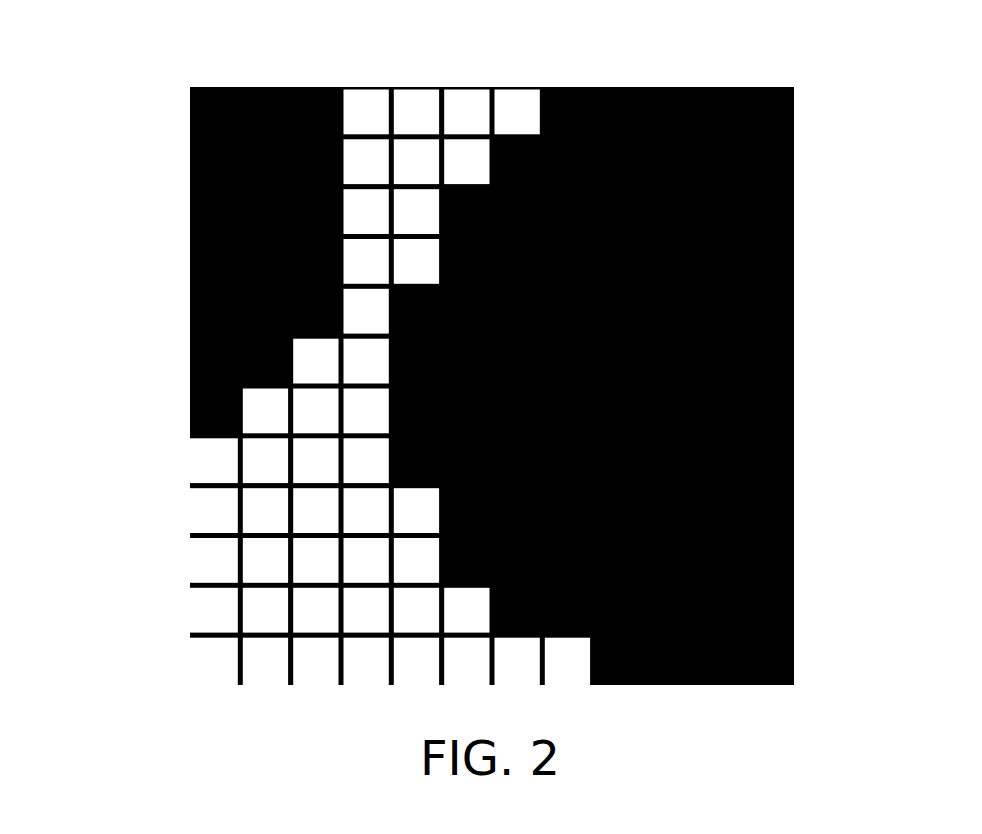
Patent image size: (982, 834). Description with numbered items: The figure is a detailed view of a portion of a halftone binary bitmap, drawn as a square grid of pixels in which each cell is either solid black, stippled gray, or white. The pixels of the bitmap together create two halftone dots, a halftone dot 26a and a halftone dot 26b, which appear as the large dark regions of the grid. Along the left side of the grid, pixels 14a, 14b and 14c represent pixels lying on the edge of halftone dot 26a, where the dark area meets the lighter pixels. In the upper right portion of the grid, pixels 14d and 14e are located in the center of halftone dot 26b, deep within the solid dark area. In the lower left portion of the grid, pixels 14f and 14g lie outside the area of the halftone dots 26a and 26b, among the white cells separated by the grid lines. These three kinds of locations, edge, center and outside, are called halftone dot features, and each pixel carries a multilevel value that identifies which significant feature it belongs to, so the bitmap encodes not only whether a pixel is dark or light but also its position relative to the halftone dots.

The pixel 14a is at (290, 88).
The pixel 14b is at (190, 126).
The pixel 14c is at (190, 177).
The pixel 14d is at (635, 203).
The pixel 14e is at (707, 203).
The pixel 14f is at (300, 602).
The pixel 14g is at (270, 562).
The halftone dot 26a is at (202, 215).
The halftone dot 26b is at (392, 399).